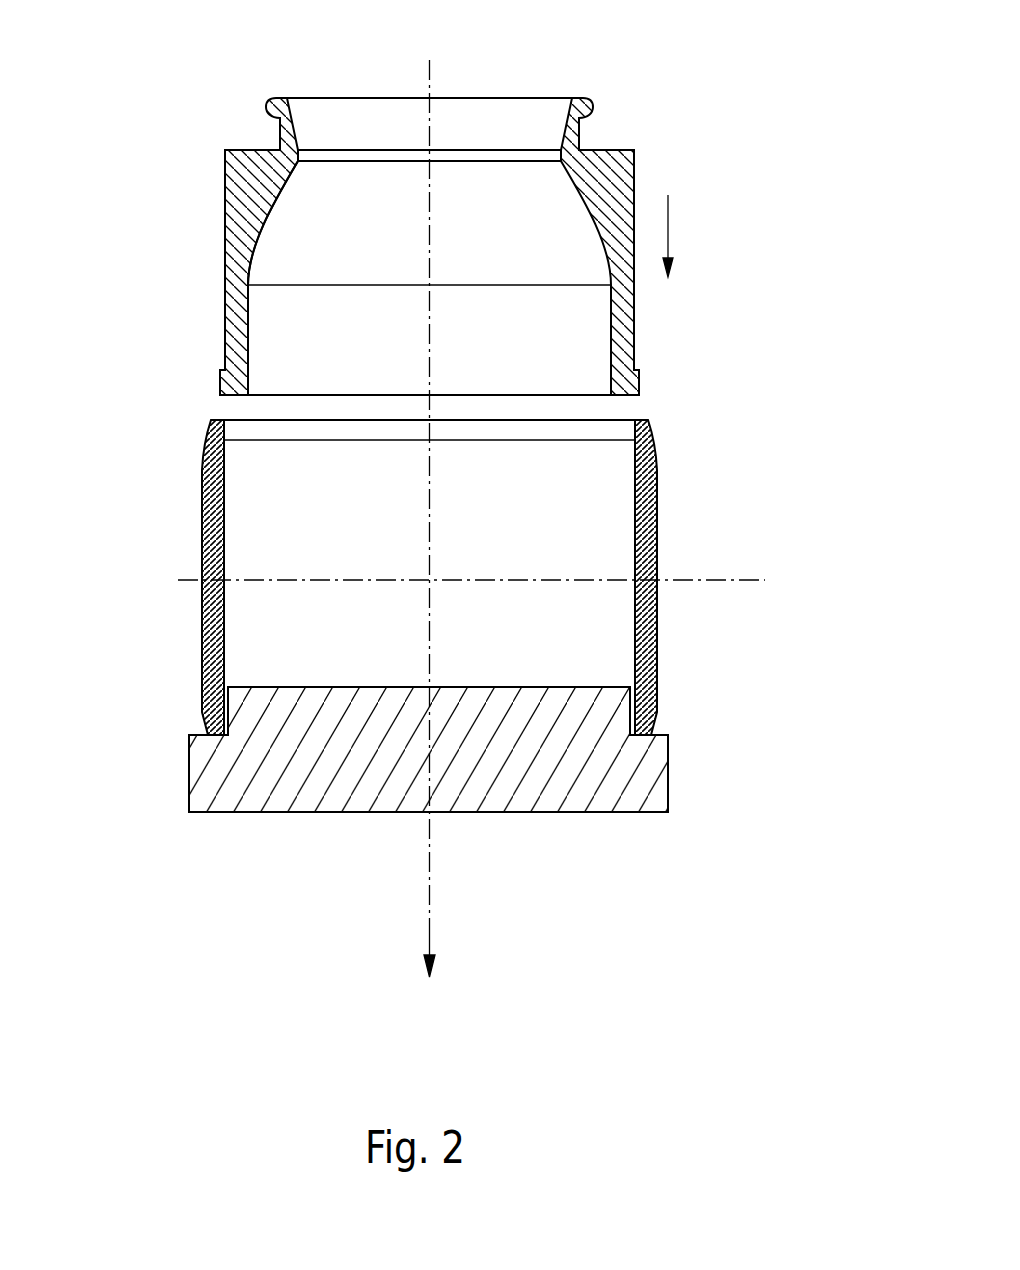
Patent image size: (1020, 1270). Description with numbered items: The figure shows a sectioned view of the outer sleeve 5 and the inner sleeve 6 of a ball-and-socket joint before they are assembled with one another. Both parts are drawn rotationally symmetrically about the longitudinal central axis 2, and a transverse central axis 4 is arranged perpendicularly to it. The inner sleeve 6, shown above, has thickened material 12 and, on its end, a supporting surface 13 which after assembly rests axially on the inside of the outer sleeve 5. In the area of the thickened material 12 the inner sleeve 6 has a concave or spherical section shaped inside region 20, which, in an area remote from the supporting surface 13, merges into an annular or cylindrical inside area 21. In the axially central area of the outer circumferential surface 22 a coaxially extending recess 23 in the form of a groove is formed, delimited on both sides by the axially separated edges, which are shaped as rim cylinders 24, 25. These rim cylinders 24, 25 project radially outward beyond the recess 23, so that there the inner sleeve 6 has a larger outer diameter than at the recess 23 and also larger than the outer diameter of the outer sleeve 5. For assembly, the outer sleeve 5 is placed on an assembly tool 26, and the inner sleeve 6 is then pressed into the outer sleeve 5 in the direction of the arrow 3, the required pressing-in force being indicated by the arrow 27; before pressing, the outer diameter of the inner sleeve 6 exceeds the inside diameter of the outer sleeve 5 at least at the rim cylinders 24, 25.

The longitudinal central axis 2 is at (430, 400).
The arrow 3 is at (431, 937).
The transverse central axis 4 is at (185, 580).
The outer sleeve 5 is at (655, 510).
The inner sleeve 6 is at (243, 150).
The thickened material 12 is at (444, 216).
The supporting surface 13 is at (606, 150).
The inside region 20 is at (258, 228).
The inside area 21 is at (248, 320).
The outer circumferential surface 22 is at (225, 340).
The recess 23 is at (636, 300).
The rim cylinder 24 is at (635, 168).
The rim cylinder 25 is at (638, 380).
The assembly tool 26 is at (660, 780).
The arrow 27 is at (668, 210).